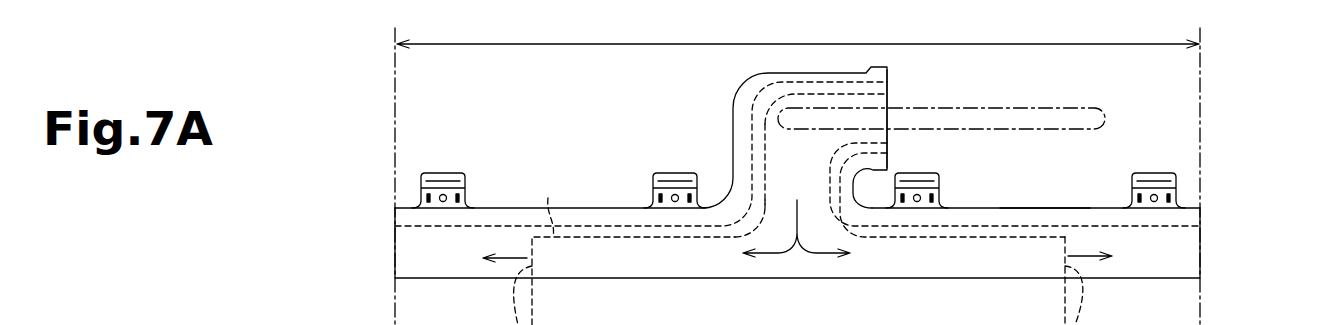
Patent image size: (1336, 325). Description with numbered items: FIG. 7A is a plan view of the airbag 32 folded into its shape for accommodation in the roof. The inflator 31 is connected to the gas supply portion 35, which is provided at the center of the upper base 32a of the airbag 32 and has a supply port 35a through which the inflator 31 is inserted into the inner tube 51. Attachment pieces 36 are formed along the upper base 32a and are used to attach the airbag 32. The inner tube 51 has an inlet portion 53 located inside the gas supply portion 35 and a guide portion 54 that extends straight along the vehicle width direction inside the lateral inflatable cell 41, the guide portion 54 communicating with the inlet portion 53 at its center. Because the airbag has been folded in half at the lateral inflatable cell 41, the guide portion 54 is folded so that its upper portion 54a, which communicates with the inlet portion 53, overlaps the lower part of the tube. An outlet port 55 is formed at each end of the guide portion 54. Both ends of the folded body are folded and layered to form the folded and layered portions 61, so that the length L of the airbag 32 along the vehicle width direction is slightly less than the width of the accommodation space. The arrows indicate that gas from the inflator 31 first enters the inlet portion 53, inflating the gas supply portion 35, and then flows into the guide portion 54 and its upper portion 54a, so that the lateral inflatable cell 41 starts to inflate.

The inflator 31 is at (1037, 108).
The airbag 32 is at (1234, 133).
The upper base 32a is at (1041, 208).
The gas supply portion 35 is at (770, 73).
The supply port 35a is at (887, 92).
The attachment pieces 36 is at (447, 172).
The lateral inflatable cell 41 is at (885, 270).
The inner tube 51 is at (759, 165).
The inlet portion 53 is at (764, 118).
The guide portion 54 is at (796, 247).
The upper portion 54a is at (588, 203).
The outlet port 55 is at (798, 295).
The folded and layered portions 61 is at (797, 317).
The length L is at (531, 46).